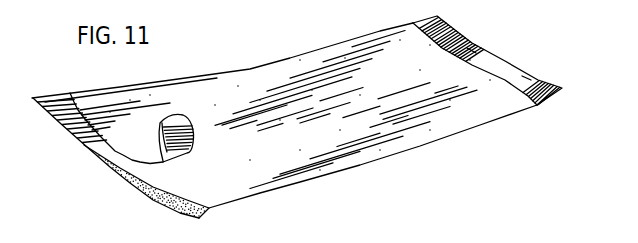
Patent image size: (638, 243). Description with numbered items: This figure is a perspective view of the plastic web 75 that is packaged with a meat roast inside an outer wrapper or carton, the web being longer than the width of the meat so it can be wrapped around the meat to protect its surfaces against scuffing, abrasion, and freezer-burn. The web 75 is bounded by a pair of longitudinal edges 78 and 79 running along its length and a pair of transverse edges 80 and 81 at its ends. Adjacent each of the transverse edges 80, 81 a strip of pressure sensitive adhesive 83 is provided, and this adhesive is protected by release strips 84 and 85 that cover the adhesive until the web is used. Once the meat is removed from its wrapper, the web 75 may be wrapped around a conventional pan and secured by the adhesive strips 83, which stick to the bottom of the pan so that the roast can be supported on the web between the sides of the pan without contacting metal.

The plastic web 75 is at (445, 131).
The longitudinal edge 78 is at (248, 68).
The longitudinal edge 79 is at (330, 172).
The transverse edge 80 is at (512, 61).
The transverse edge 81 is at (130, 187).
The strip of pressure sensitive adhesive 83 is at (190, 213).
The release strip 84 is at (78, 141).
The release strip 85 is at (477, 50).